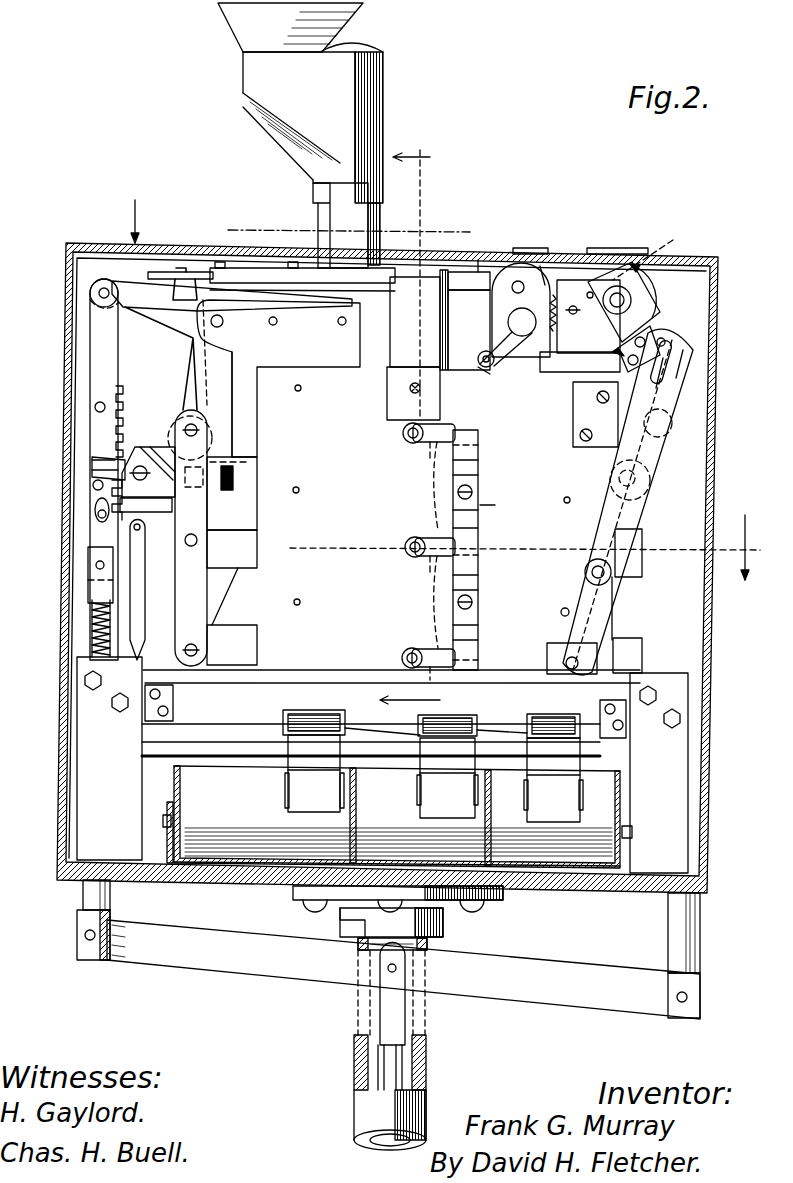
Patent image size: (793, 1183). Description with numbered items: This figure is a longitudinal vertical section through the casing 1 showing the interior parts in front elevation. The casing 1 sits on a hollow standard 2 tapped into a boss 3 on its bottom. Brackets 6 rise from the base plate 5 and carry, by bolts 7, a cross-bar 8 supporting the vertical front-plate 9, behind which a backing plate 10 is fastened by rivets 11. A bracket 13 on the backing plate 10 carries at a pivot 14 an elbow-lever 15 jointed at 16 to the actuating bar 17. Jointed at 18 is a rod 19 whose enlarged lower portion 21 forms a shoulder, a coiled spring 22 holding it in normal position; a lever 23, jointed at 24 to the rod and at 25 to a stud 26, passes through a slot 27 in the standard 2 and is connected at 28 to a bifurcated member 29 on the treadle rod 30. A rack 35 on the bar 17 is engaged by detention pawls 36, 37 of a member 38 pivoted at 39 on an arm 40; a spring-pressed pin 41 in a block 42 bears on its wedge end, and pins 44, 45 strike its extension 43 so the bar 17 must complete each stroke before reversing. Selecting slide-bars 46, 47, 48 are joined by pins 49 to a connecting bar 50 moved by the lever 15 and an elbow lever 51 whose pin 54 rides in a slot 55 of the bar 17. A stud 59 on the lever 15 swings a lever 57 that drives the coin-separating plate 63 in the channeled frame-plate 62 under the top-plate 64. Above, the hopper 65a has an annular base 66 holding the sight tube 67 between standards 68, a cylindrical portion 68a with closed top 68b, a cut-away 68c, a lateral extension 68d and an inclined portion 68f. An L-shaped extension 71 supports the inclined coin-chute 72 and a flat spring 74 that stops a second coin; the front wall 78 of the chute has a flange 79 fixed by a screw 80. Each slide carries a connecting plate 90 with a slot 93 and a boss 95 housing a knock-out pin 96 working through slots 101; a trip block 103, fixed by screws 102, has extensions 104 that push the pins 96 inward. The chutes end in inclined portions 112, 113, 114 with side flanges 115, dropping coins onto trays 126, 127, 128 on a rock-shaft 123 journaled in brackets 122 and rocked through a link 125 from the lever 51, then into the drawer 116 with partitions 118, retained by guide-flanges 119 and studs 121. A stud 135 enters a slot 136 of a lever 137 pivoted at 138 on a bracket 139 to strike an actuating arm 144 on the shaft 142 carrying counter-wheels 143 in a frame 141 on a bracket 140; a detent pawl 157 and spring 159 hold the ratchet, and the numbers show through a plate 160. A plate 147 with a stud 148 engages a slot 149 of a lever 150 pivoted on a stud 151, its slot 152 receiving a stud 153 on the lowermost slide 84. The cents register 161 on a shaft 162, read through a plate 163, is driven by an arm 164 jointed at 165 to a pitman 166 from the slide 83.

The casing 1 is at (72, 386).
The standard 2 is at (372, 1104).
The boss 3 is at (293, 890).
The base plate 5 is at (565, 902).
The brackets 6 is at (80, 750).
The bolts 7 is at (102, 681).
The cross-bar 8 is at (133, 238).
The front-plate 9 is at (335, 591).
The backing plate 10 is at (411, 274).
The rivets or screws 11 is at (301, 389).
The bracket 13 is at (392, 1004).
The pivot 14 is at (223, 321).
The elbow-lever 15 is at (232, 298).
The joint 16 is at (90, 293).
The actuating bar 17 is at (91, 330).
The joint 18 is at (88, 568).
The rod 19 is at (90, 608).
The enlarged lower portion 21 is at (84, 892).
The coiled spring 22 is at (92, 634).
The lever 23 is at (222, 965).
The joint 24 is at (80, 940).
The joint 25 is at (700, 993).
The stud 26 is at (700, 945).
The slot 27 is at (428, 1015).
The joint 28 is at (380, 968).
The bifurcated member 29 is at (406, 978).
The rod 30 is at (392, 1148).
The rack 35 is at (124, 416).
The detention pawl 36 is at (106, 456).
The detention pawl 37 is at (96, 488).
The pawl member 38 is at (177, 438).
The pivot 39 is at (130, 455).
The horizontal arm 40 is at (258, 491).
The horizontal pin 41 is at (232, 476).
The block 42 is at (230, 450).
The forward extension 43 is at (92, 460).
The pin 44 is at (105, 404).
The pin 45 is at (95, 470).
The slide-bar 46 is at (243, 405).
The slide-bar 47 is at (242, 542).
The slide-bar 48 is at (244, 652).
The pins 49 is at (198, 426).
The connecting bar 50 is at (191, 538).
The elbow lever 51 is at (146, 503).
The pin 54 is at (96, 508).
The vertical slot 55 is at (98, 516).
The lever 57 is at (172, 268).
The stud 59 is at (206, 352).
The horizontal frame-plate 62 is at (214, 264).
The coin-separating plate 63 is at (152, 272).
The top-plate 64 is at (232, 268).
The coin receiving hopper 65a is at (383, 105).
The annular base portion 66 is at (290, 268).
The sight tube 67 is at (325, 222).
The upright standards 68 is at (350, 200).
The cylindrical portion 68a is at (385, 88).
The closed top 68b is at (352, 45).
The cut-away portion 68c is at (248, 32).
The lateral extension 68d is at (243, 85).
The inclined portion 68f is at (268, 143).
The L-shaped extension 71 is at (478, 260).
The inclined coin-chute 72 is at (384, 318).
The flat spring 74 is at (442, 268).
The front wall 78 is at (446, 325).
The depending flange 79 is at (413, 393).
The screw 80 is at (410, 388).
The slide 83 is at (645, 550).
The slide 84 is at (645, 650).
The connecting plate 90 is at (428, 545).
The slot 93 is at (453, 550).
The boss 95 is at (410, 444).
The knock-out pin 96 is at (403, 433).
The slots 101 is at (440, 428).
The screws 102 is at (473, 490).
The trip block 103 is at (505, 503).
The forwardly extended portions 104 is at (498, 662).
The inclined portion 112 is at (318, 715).
The inclined portion 113 is at (560, 722).
The inclined portion 114 is at (410, 693).
The side flanges 115 is at (400, 730).
The coin receptacle 116 is at (176, 800).
The partitions 118 is at (358, 802).
The guide-flanges 119 is at (168, 850).
The studs 121 is at (163, 822).
The brackets 122 is at (145, 718).
The rock-shaft 123 is at (236, 740).
The link 125 is at (138, 590).
The tray 126 is at (314, 773).
The tray 127 is at (554, 780).
The tray 128 is at (447, 778).
The stud 135 is at (640, 495).
The slot 136 is at (652, 476).
The lever 137 is at (698, 362).
The pivot 138 is at (672, 428).
The bracket 139 is at (595, 414).
The bracket 140 is at (580, 362).
The counter supporting frame 141 is at (585, 317).
The shaft 142 is at (659, 258).
The counter-wheels 143 is at (596, 260).
The actuating arm 144 is at (638, 312).
The plate 147 is at (650, 330).
The stud 148 is at (678, 350).
The slot 149 is at (686, 375).
The lever 150 is at (655, 340).
The stud 151 is at (610, 578).
The slot 152 is at (568, 655).
The stud 153 is at (556, 665).
The detent pawl 157 is at (574, 295).
The spring 159 is at (573, 310).
The plate 160 is at (640, 248).
The registering mechanism for cents 161 is at (543, 272).
The shaft 162 is at (523, 320).
The plate 163 is at (516, 248).
The actuating arm 164 is at (507, 337).
The joint 165 is at (484, 356).
The pitman 166 is at (492, 365).